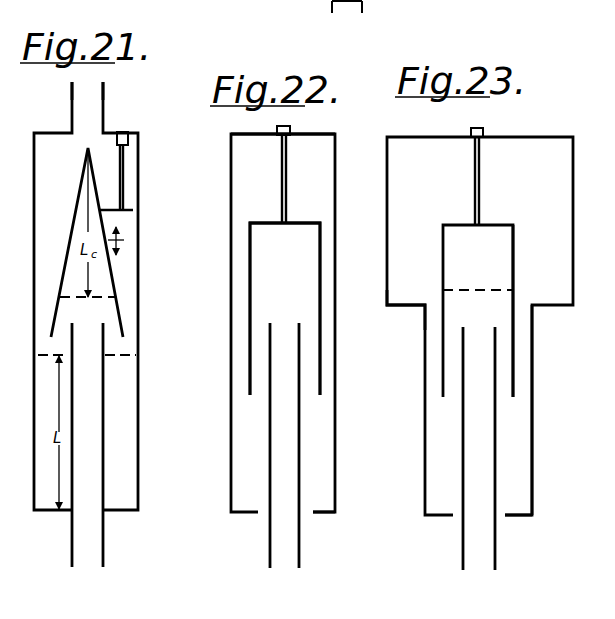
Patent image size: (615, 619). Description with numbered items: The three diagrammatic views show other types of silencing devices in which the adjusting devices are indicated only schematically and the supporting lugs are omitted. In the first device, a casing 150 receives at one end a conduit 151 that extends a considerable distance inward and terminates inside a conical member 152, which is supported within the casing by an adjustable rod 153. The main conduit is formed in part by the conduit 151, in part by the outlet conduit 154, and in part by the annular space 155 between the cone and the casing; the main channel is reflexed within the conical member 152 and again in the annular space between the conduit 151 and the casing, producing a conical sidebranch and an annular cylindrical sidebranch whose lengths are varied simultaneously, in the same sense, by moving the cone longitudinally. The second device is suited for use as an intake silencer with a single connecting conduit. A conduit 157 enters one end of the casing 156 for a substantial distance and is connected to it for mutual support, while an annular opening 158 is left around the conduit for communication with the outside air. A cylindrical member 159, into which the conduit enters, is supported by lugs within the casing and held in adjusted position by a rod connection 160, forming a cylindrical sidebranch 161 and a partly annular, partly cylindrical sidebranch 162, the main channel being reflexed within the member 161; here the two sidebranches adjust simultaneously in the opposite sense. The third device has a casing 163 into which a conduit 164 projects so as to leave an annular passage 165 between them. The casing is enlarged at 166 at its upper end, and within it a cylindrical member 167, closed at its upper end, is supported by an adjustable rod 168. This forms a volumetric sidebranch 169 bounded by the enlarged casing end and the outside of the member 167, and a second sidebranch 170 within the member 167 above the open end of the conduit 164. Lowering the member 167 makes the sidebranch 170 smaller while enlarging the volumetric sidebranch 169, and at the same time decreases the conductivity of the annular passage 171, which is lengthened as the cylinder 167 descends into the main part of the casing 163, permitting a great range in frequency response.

In FIG. 21, the casing 150 is at (141, 296).
In FIG. 21, the conduit 151 is at (104, 437).
In FIG. 21, the conical member 152 is at (113, 271).
In FIG. 21, the adjustable rod 153 is at (123, 169).
In FIG. 21, the outlet conduit 154 is at (105, 103).
In FIG. 21, the annular space 155 is at (47, 218).
In FIG. 22, the casing 156 is at (337, 382).
In FIG. 22, the conduit 157 is at (300, 450).
In FIG. 22, the annular opening 158 is at (306, 513).
In FIG. 22, the sleeve 159 is at (320, 257).
In FIG. 22, the rod connection 160 is at (283, 165).
In FIG. 22, the cylindrical sidebranch 161 is at (283, 291).
In FIG. 22, the annular sidebranch 162 is at (283, 163).
In FIG. 23, the casing 163 is at (533, 436).
In FIG. 23, the conduit 164 is at (497, 487).
In FIG. 23, the annular passage 165 is at (500, 517).
In FIG. 23, the enlarged end of casing 166 is at (387, 291).
In FIG. 23, the cylindrical member 167 is at (443, 250).
In FIG. 23, the adjustable rod 168 is at (476, 163).
In FIG. 23, the volumetric sidebranch 169 is at (480, 326).
In FIG. 23, the second sidebranch 170 is at (478, 268).
In FIG. 23, the annular passage 171 is at (518, 364).